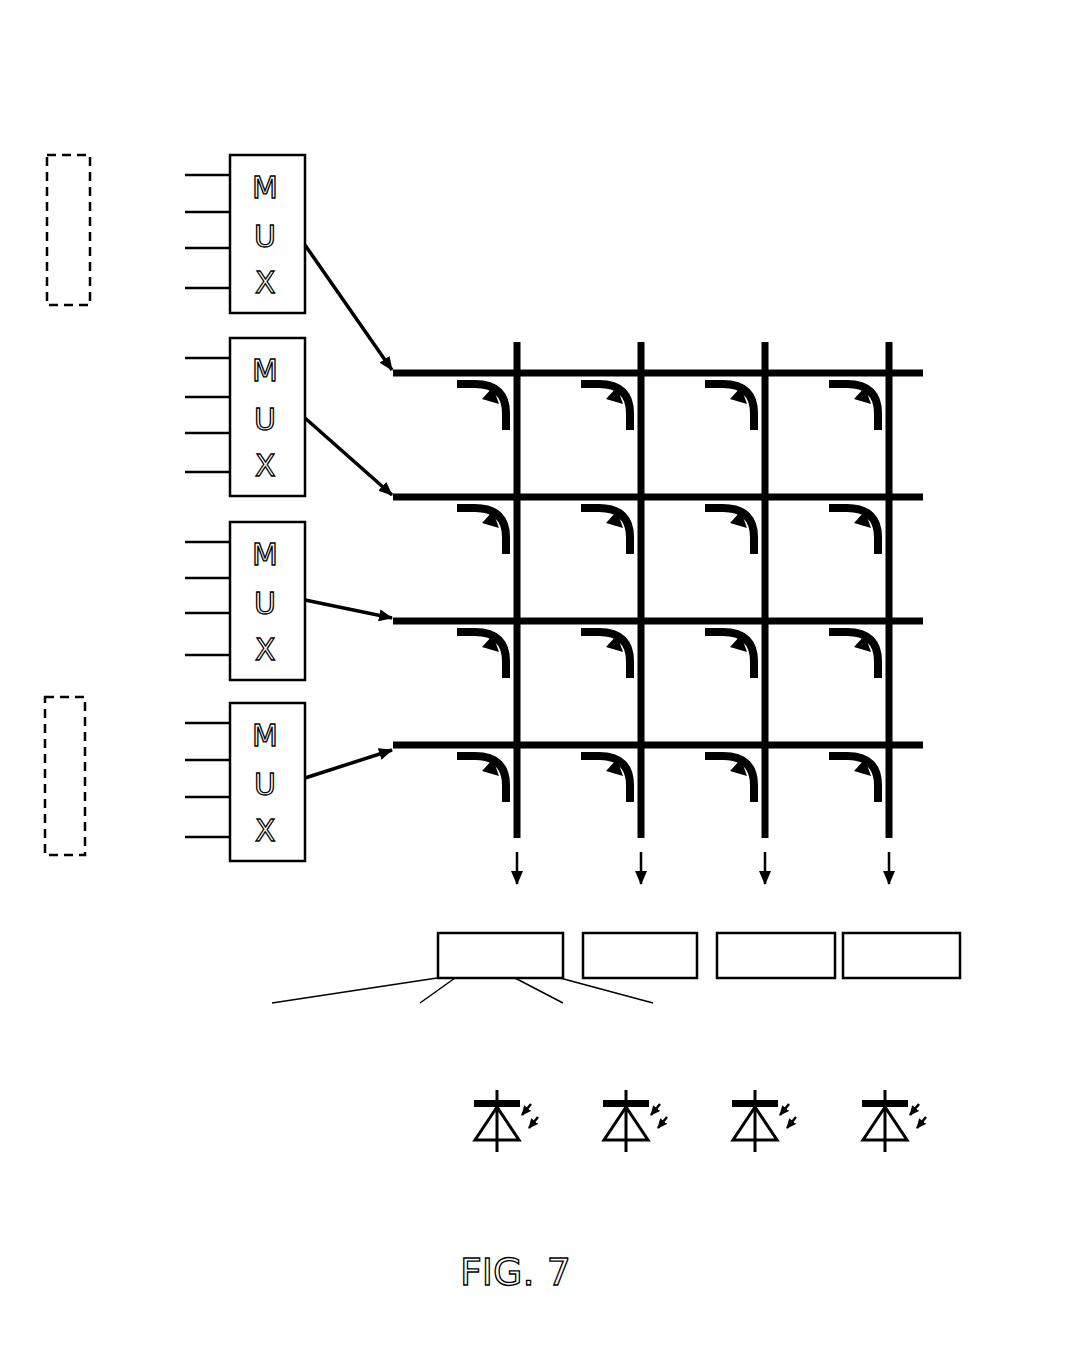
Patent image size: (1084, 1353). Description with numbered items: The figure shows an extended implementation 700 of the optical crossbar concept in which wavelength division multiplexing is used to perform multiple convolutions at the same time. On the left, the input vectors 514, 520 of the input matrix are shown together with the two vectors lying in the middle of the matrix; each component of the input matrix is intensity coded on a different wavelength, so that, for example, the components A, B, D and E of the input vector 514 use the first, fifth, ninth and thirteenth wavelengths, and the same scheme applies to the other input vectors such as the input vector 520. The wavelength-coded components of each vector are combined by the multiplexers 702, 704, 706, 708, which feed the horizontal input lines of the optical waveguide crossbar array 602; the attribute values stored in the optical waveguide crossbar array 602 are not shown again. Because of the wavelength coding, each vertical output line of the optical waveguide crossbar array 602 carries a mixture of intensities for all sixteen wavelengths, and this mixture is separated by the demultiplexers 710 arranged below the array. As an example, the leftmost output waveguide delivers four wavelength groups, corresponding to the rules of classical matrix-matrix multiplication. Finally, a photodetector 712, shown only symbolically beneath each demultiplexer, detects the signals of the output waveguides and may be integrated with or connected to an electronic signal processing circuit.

The input vector 514 is at (76, 140).
The input vector 520 is at (72, 868).
The extended implementation 700 is at (697, 127).
The multiplexer 702 is at (266, 140).
The multiplexer 704 is at (313, 342).
The multiplexer 706 is at (307, 541).
The multiplexer 708 is at (311, 721).
The optical waveguide crossbar array 602 is at (821, 347).
The demultiplexers 710 is at (418, 958).
The photodetector 712 is at (860, 1151).